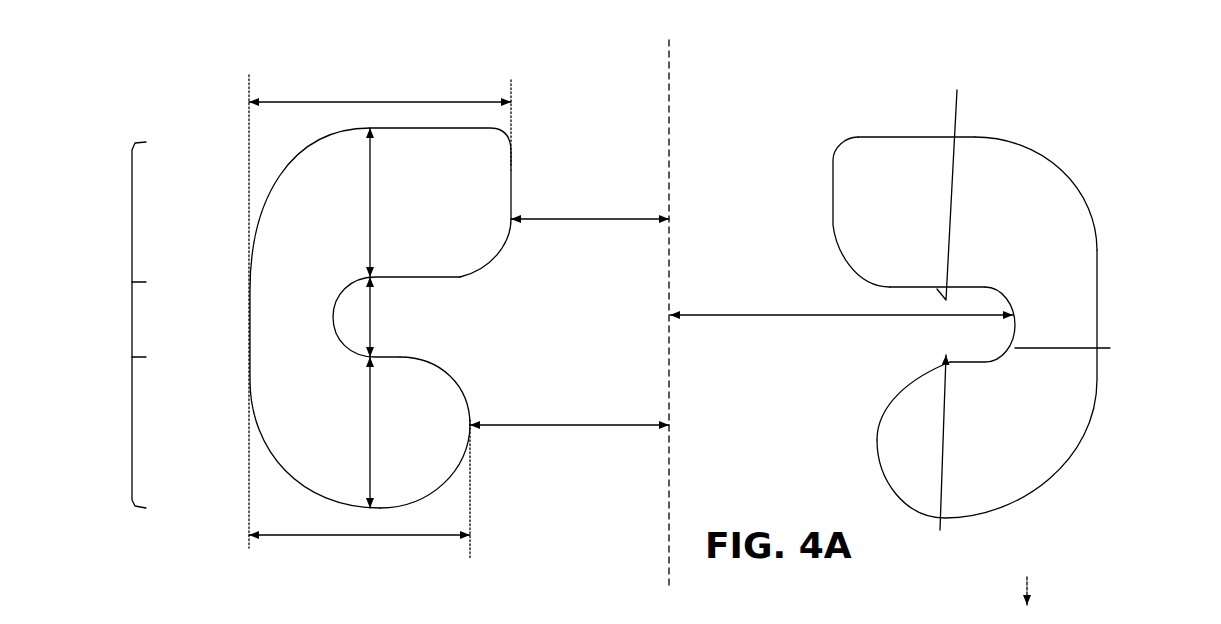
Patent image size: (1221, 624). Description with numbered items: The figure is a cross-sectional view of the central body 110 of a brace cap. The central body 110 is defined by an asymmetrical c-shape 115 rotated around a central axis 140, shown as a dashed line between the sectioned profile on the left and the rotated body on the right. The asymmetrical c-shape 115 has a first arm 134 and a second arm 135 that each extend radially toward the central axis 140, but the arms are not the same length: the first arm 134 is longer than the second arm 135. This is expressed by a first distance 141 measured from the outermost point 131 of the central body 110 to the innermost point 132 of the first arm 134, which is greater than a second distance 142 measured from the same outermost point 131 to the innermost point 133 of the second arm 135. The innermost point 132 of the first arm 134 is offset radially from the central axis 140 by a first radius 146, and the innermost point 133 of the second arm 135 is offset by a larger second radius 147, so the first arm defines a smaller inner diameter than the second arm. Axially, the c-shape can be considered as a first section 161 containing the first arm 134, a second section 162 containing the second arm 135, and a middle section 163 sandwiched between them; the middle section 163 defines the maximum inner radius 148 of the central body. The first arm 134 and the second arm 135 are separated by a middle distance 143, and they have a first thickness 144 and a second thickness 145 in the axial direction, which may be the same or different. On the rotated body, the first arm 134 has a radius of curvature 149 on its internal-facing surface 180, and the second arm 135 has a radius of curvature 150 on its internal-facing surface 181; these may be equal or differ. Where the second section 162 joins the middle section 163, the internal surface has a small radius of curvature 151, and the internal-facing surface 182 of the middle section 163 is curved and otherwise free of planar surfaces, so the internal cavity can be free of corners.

The central body 110 is at (912, 115).
The asymmetrical c-shape 115 is at (988, 167).
The outermost point 131 is at (248, 303).
The innermost point of the first arm 132 is at (511, 219).
The innermost point of the second arm 133 is at (472, 435).
The first arm 134 is at (452, 228).
The second arm 135 is at (443, 408).
The central axis 140 is at (668, 118).
The first distance 141 is at (382, 100).
The second distance 142 is at (380, 541).
The middle distance 143 is at (372, 313).
The first thickness 144 is at (372, 198).
The second thickness 145 is at (372, 410).
The first radius 146 is at (585, 223).
The second radius 147 is at (582, 423).
The maximum inner radius 148 is at (770, 318).
The radius of curvature of the first arm 149 is at (877, 282).
The radius of curvature of the second arm 150 is at (893, 388).
The radius of curvature connecting the second section with the middle section 151 is at (1010, 337).
The first section 161 is at (132, 212).
The second section 162 is at (132, 432).
The middle section 163 is at (132, 318).
The internal-facing surface of the first arm 180 is at (958, 172).
The internal-facing surface of the second arm 181 is at (940, 466).
The internal-facing surface of the middle portion 182 is at (1101, 350).